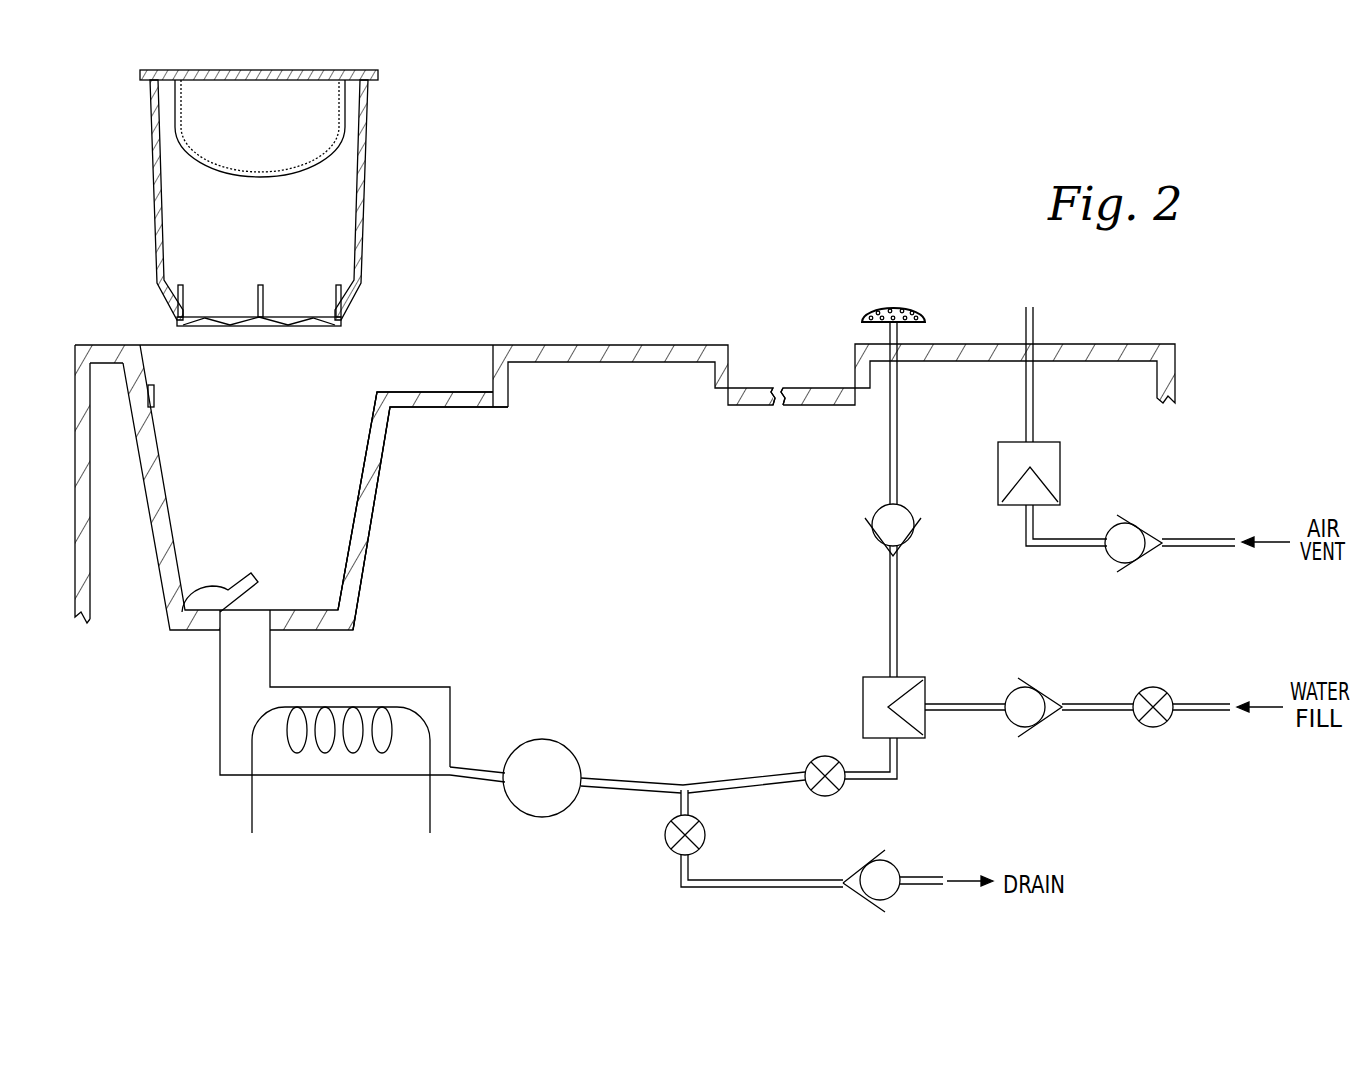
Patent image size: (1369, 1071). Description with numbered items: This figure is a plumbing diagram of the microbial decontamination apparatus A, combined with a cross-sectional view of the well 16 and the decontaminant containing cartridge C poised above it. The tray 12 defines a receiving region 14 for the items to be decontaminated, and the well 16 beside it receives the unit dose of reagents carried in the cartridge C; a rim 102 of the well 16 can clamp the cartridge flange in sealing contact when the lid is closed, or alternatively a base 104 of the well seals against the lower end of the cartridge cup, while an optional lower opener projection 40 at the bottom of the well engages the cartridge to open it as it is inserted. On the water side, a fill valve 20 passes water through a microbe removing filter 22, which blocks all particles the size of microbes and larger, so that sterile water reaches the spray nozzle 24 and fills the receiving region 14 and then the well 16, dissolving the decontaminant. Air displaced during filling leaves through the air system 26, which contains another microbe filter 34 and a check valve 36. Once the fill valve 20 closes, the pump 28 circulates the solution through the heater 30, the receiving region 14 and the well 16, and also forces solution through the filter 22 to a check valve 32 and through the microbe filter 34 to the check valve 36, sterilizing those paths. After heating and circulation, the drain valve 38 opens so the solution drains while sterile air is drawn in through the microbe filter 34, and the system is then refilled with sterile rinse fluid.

The cartridge C is at (395, 175).
The microbial decontamination apparatus A is at (682, 200).
The tray 12 is at (625, 345).
The receiving region 14 is at (770, 355).
The well 16 is at (166, 400).
The fill valve 20 is at (1158, 687).
The microbe removing filter 22 is at (863, 710).
The spray nozzle 24 is at (900, 303).
The air system 26 is at (991, 553).
The pump 28 is at (567, 745).
The heater 30 is at (370, 707).
The check valve 32 is at (1045, 690).
The microbe filter 34 is at (1062, 475).
The check valve 36 is at (1132, 525).
The drain valve 38 is at (662, 835).
The lower opener projection 40 is at (202, 575).
The rim 102 is at (406, 380).
The base 104 is at (318, 610).